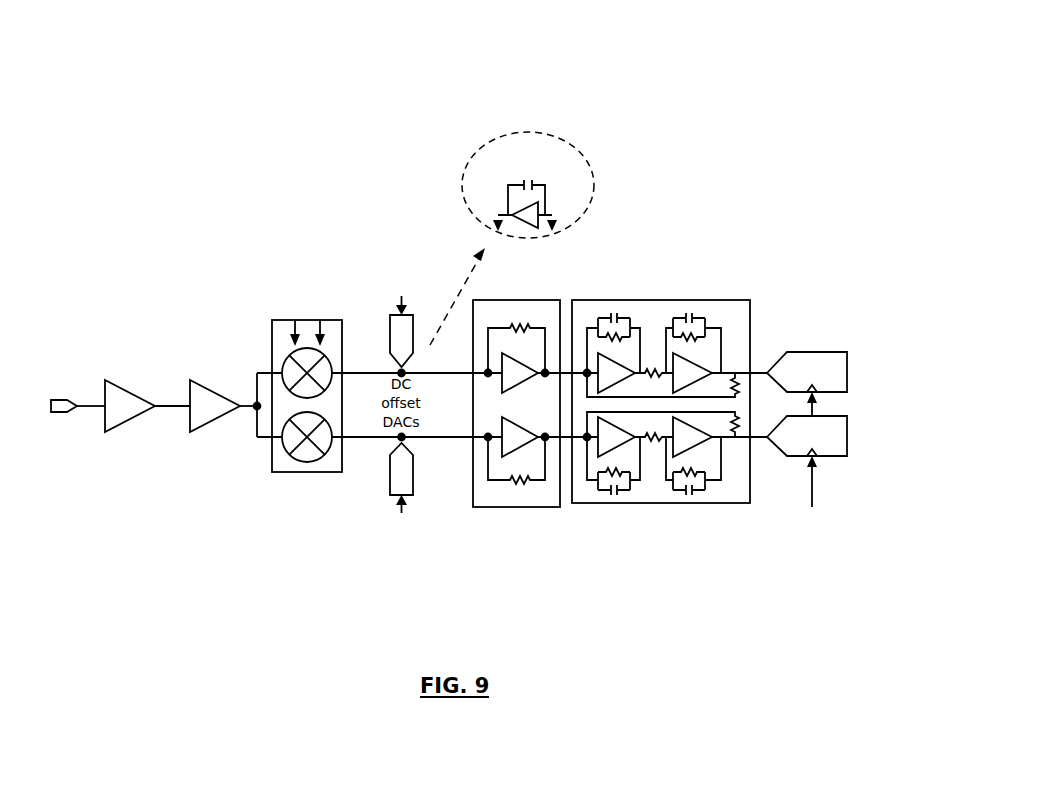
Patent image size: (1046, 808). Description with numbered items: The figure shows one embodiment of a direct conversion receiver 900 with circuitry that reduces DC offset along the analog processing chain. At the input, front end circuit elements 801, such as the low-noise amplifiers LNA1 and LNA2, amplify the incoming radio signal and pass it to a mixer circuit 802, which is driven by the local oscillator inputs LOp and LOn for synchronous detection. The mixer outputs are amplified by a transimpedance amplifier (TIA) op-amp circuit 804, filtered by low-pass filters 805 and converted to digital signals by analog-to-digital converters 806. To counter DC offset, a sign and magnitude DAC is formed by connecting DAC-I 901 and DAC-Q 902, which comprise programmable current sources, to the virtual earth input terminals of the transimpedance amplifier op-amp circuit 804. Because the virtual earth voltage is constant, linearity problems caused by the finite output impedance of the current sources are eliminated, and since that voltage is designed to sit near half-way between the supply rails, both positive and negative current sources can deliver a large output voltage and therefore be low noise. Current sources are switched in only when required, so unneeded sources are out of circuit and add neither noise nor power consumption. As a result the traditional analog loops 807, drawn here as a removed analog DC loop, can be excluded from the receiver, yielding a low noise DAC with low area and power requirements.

The direct conversion receiver 900 is at (710, 112).
The front end circuit elements 801 is at (155, 361).
The mixer circuit 802 is at (312, 474).
The transimpedance amplifier op-amp circuit 804 is at (517, 508).
The low-pass filters 805 is at (663, 505).
The analog-to-digital converters 806 is at (848, 428).
The analog loops 807 is at (597, 178).
The DAC-I 901 is at (413, 312).
The DAC-Q 902 is at (415, 497).